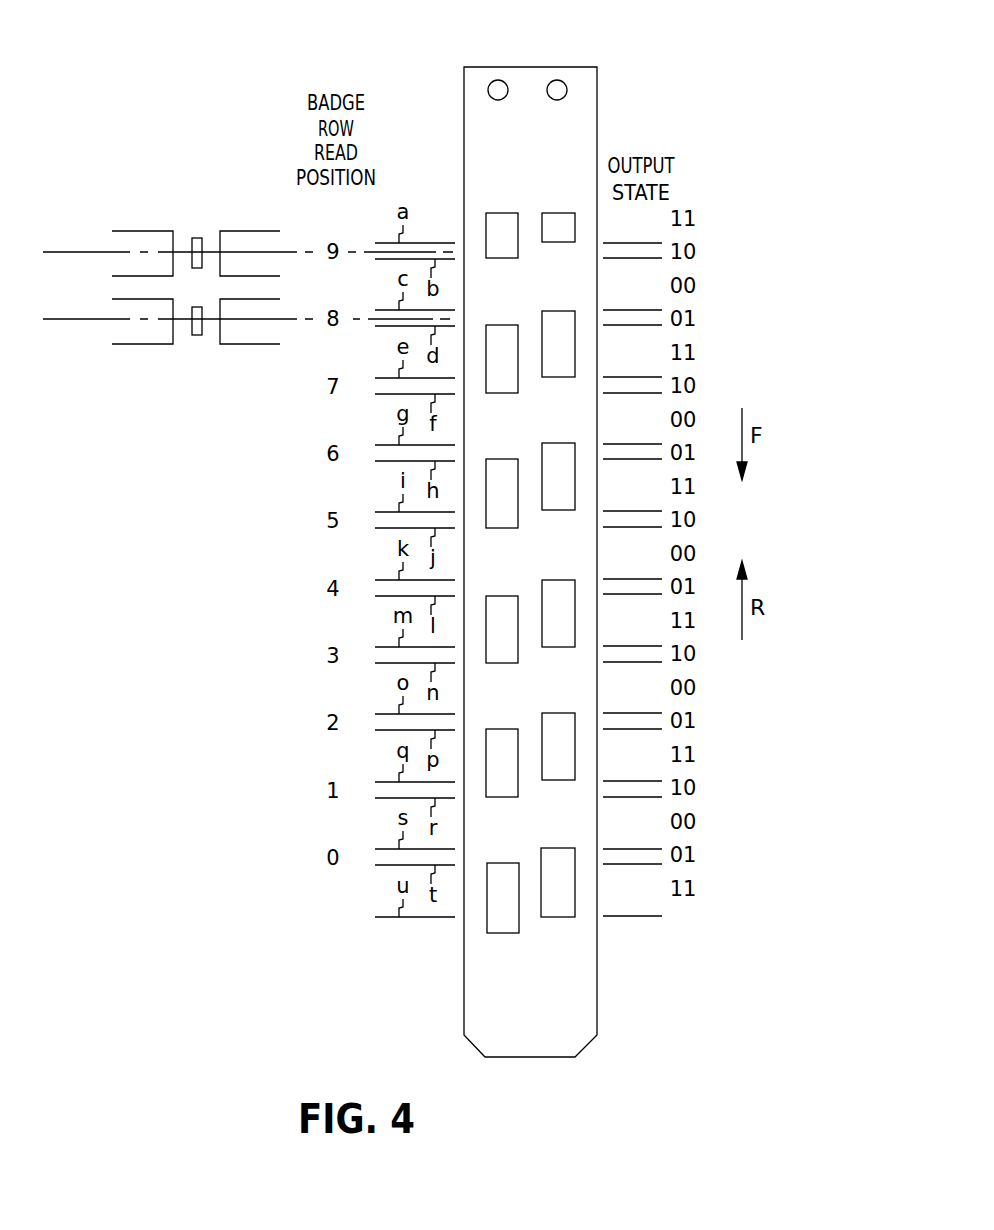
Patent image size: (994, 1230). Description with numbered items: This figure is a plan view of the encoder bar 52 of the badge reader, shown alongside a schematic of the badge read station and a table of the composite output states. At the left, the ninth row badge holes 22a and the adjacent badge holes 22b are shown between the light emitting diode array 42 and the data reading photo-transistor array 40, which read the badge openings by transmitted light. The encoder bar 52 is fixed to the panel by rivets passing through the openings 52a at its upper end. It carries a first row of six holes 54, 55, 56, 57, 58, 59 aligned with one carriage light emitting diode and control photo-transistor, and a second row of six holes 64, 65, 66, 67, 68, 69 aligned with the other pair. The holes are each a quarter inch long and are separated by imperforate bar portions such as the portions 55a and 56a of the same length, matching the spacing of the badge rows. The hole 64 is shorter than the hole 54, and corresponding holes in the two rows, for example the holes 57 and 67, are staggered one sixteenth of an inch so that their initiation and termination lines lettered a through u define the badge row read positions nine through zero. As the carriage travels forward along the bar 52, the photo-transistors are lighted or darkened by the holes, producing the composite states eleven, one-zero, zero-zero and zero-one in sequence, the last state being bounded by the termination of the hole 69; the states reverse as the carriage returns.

The ninth row badge holes 22a is at (248, 212).
The lower sensor 22b is at (246, 359).
The data reading photo-transistor array 40 is at (213, 229).
The light emitting diode array 42 is at (180, 229).
The encoder bar 52 is at (521, 1008).
The openings 52a is at (541, 56).
The hole 54 is at (502, 212).
The hole 55 is at (492, 366).
The bar portion 55a is at (521, 303).
The hole 56 is at (492, 500).
The bar portion 56a is at (521, 439).
The hole 57 is at (502, 607).
The hole 58 is at (502, 741).
The hole 59 is at (503, 875).
The hole 64 is at (558, 204).
The hole 65 is at (558, 322).
The hole 66 is at (558, 455).
The hole 67 is at (558, 590).
The hole 68 is at (558, 724).
The hole 69 is at (558, 860).